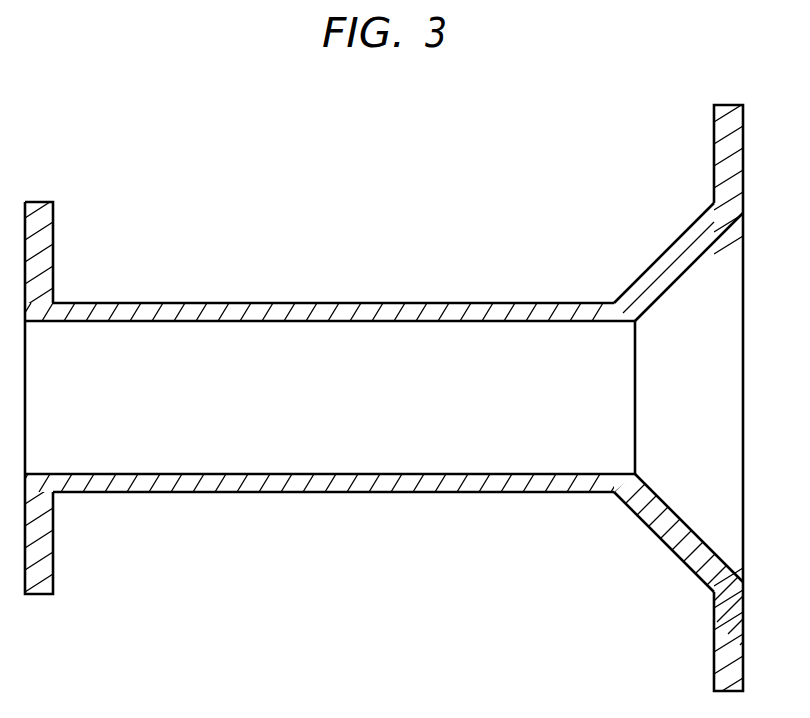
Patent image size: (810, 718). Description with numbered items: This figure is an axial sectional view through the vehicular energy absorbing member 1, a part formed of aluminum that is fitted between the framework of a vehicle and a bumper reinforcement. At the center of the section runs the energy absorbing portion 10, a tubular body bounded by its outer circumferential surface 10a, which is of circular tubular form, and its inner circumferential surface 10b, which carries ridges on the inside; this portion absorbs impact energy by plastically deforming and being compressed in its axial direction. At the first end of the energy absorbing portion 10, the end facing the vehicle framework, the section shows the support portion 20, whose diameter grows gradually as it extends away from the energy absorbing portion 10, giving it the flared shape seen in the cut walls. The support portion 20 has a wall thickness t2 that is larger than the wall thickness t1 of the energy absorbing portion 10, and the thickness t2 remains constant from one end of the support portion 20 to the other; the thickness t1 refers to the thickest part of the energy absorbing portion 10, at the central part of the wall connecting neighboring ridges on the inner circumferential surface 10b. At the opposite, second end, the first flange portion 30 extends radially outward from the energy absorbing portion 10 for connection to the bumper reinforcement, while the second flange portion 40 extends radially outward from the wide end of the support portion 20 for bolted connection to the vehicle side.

The vehicular energy absorbing member 1 is at (120, 155).
The energy absorbing portion 10 is at (293, 314).
The outer circumferential surface 10a is at (180, 302).
The inner circumferential surface 10b is at (182, 322).
The support portion 20 is at (703, 227).
The first flange portion 30 is at (45, 232).
The second flange portion 40 is at (726, 138).
The thickness of the energy absorbing portion t1 is at (505, 321).
The thickness of the support portion t2 is at (663, 292).